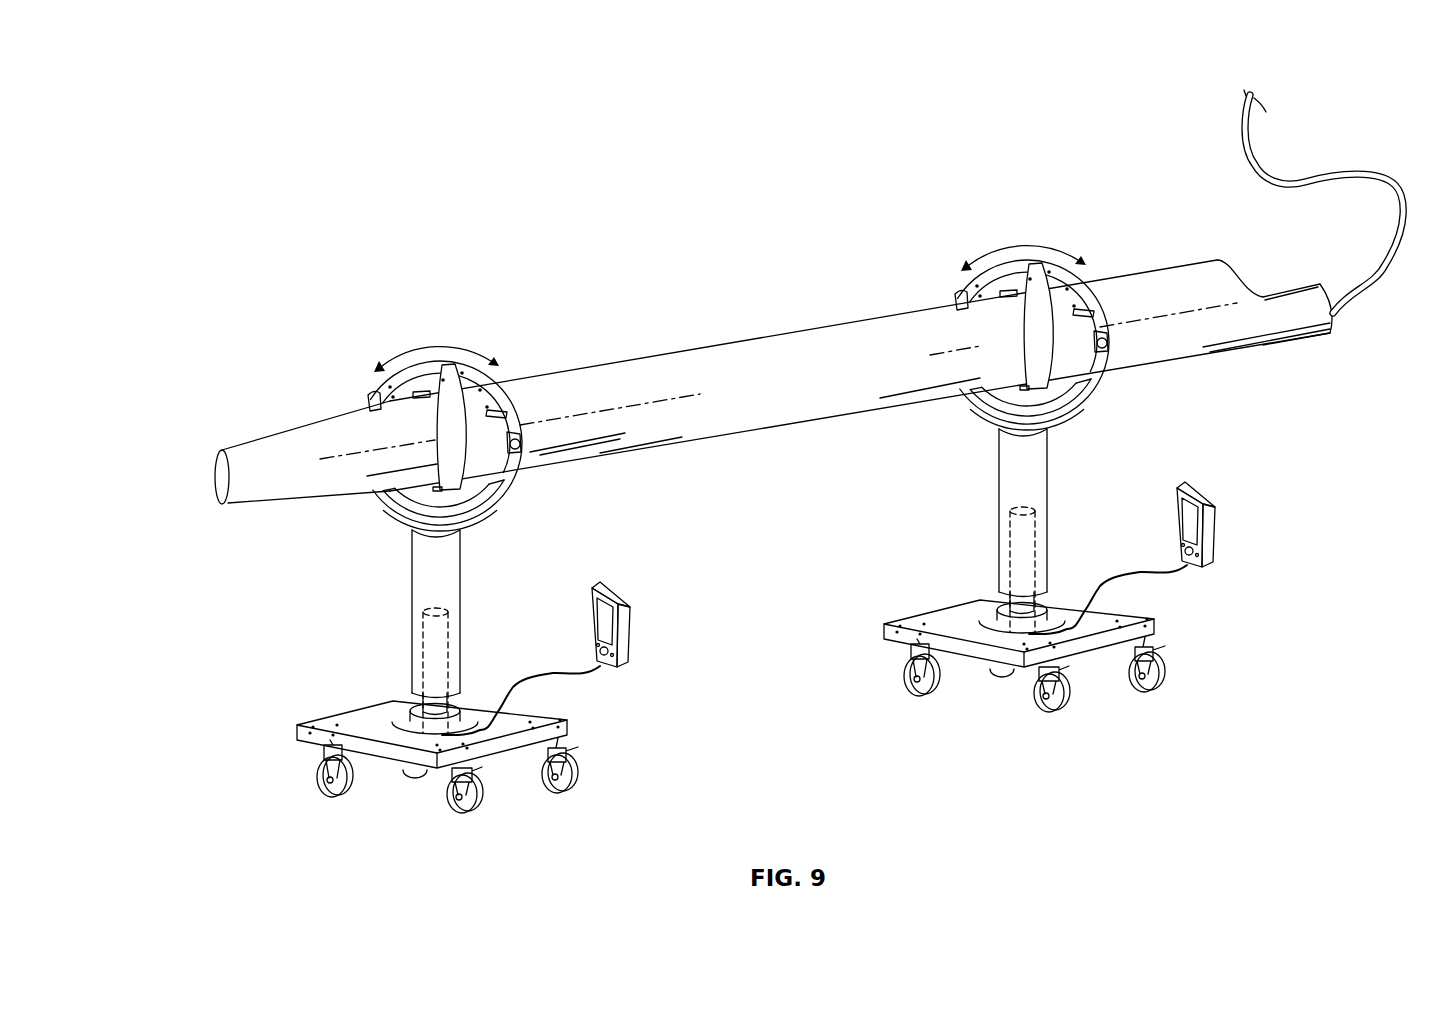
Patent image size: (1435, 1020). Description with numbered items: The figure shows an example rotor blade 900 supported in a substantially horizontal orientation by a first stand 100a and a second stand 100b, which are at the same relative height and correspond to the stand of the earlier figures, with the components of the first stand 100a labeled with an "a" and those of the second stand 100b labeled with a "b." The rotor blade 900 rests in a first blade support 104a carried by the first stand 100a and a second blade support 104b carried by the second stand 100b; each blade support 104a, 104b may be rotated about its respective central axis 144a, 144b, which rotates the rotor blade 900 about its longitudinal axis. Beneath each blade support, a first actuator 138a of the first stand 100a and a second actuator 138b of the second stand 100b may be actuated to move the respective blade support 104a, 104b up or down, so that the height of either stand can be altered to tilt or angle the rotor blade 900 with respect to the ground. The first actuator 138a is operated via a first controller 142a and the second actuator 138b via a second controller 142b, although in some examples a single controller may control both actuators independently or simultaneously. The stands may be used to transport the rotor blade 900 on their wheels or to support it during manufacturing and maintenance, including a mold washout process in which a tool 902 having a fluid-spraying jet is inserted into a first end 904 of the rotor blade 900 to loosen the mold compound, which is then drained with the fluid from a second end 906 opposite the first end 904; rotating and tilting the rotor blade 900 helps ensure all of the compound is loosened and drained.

The first stand 100a is at (394, 551).
The second stand 100b is at (1013, 456).
The first blade support 104a is at (397, 385).
The second blade support 104b is at (984, 282).
The first actuator 138a is at (410, 708).
The second actuator 138b is at (997, 606).
The first controller 142a is at (613, 598).
The second controller 142b is at (1203, 494).
The central axis of the first blade support 144a is at (330, 457).
The central axis of the second blade support 144b is at (948, 347).
The rotor blade 900 is at (772, 358).
The tool 902 is at (1243, 145).
The first end 904 is at (1365, 320).
The second end 906 is at (205, 460).